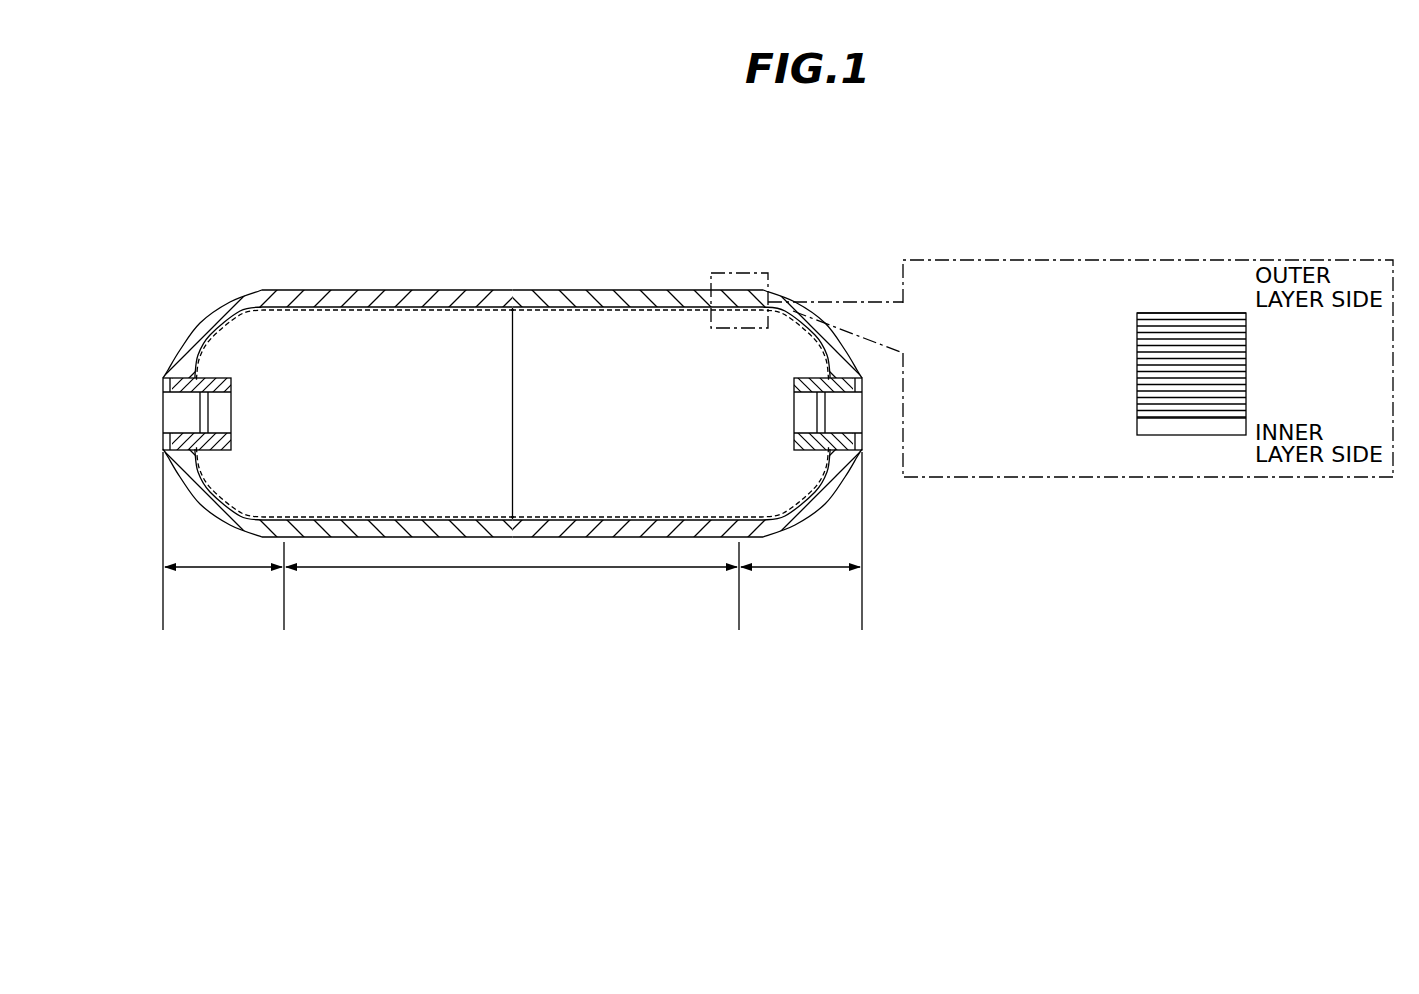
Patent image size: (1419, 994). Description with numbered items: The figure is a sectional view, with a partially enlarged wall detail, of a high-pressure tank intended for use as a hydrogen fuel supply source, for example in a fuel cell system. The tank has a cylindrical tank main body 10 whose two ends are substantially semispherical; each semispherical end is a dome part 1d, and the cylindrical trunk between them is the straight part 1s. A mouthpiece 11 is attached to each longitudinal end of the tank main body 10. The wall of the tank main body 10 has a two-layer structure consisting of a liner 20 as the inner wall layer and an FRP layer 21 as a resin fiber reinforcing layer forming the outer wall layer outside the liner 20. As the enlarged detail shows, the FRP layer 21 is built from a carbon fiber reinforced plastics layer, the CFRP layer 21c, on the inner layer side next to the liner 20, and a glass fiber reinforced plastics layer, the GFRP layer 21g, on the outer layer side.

The tank main body 10 is at (733, 362).
The mouthpiece 11 is at (213, 388).
The liner 20 is at (1110, 427).
The FRP layer 21 is at (733, 371).
The GFRP layer 21g is at (485, 301).
The CFRP layer 21c is at (620, 301).
The dome part 1d is at (512, 541).
The straight part 1s is at (511, 589).